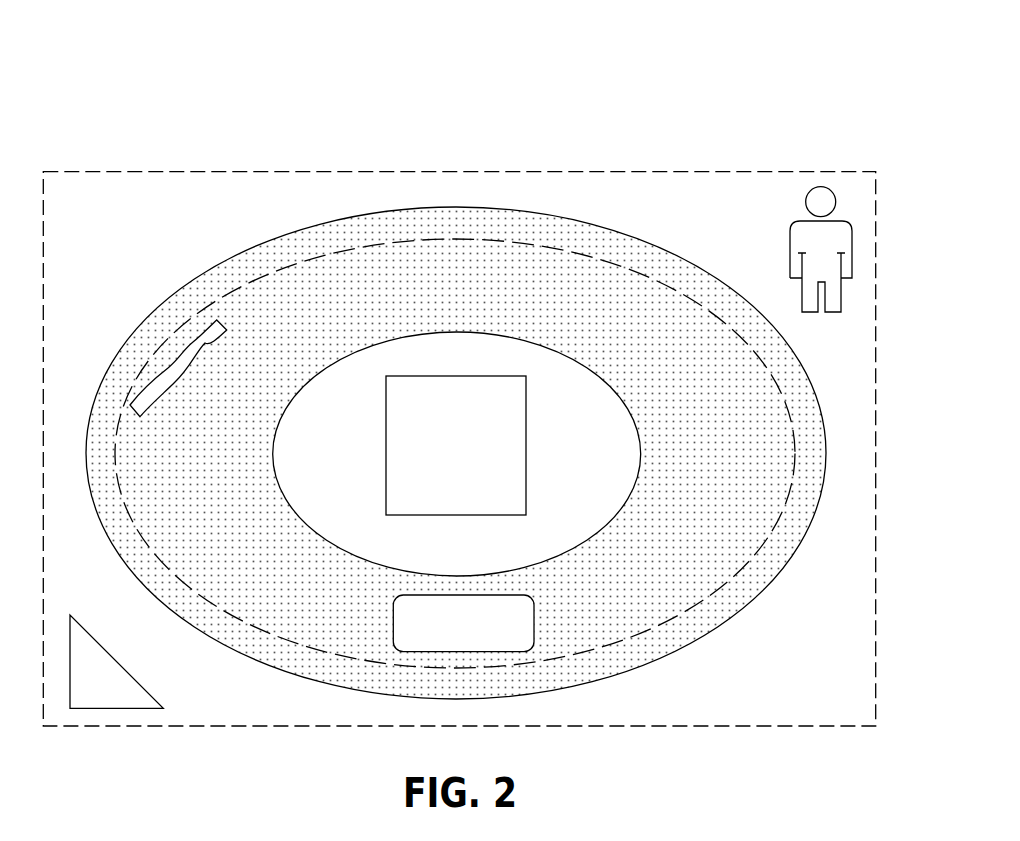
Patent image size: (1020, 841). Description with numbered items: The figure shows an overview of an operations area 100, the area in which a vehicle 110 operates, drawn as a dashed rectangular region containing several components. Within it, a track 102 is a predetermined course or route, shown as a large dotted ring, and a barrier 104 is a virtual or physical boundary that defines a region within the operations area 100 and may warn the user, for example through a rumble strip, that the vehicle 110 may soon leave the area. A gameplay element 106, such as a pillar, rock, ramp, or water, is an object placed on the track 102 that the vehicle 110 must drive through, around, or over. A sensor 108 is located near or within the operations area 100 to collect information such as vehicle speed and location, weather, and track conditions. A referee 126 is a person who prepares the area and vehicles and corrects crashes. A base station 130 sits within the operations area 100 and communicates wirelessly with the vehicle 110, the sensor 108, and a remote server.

The operations area 100 is at (630, 171).
The track 102 is at (533, 287).
The barrier 104 is at (307, 258).
The gameplay element 106 is at (197, 347).
The sensor 108 is at (116, 661).
The vehicle 110 is at (463, 623).
The referee 126 is at (803, 195).
The base station 130 is at (456, 445).